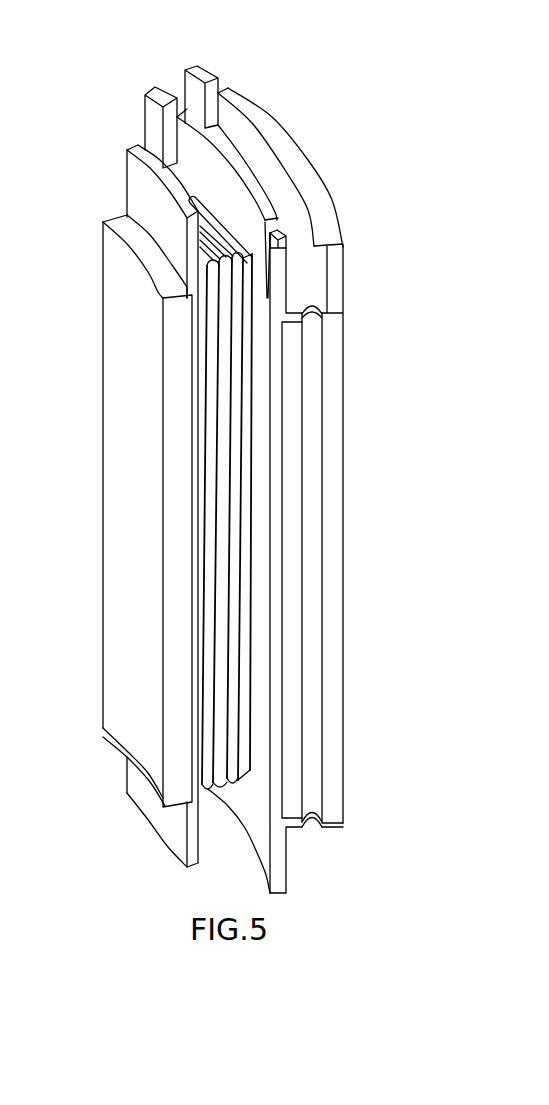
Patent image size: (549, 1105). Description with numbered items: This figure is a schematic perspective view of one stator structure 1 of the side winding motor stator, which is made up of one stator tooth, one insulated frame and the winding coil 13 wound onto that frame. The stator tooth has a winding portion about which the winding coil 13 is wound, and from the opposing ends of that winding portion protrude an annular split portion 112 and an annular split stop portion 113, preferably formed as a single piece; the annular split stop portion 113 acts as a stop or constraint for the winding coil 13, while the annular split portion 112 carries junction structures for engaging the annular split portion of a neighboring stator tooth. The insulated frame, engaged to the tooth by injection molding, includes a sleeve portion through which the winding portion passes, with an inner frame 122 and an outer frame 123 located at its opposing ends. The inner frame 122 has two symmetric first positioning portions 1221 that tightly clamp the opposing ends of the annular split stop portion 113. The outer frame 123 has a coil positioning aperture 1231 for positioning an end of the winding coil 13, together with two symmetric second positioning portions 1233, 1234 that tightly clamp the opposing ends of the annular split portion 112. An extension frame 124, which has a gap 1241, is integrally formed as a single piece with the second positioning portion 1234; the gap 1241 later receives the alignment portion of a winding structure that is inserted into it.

The stator structure 1 is at (377, 112).
The annular split portion 112 is at (332, 478).
The annular split stop portion 113 is at (117, 529).
The inner frame 122 is at (130, 180).
The first positioning portion 1221 is at (103, 223).
The outer frame 123 is at (223, 145).
The coil positioning aperture 1231 is at (166, 127).
The second positioning portion 1233 is at (338, 822).
The second positioning portion 1234 is at (290, 252).
The extension frame 124 is at (303, 168).
The gap 1241 is at (222, 83).
The winding coil 13 is at (235, 400).